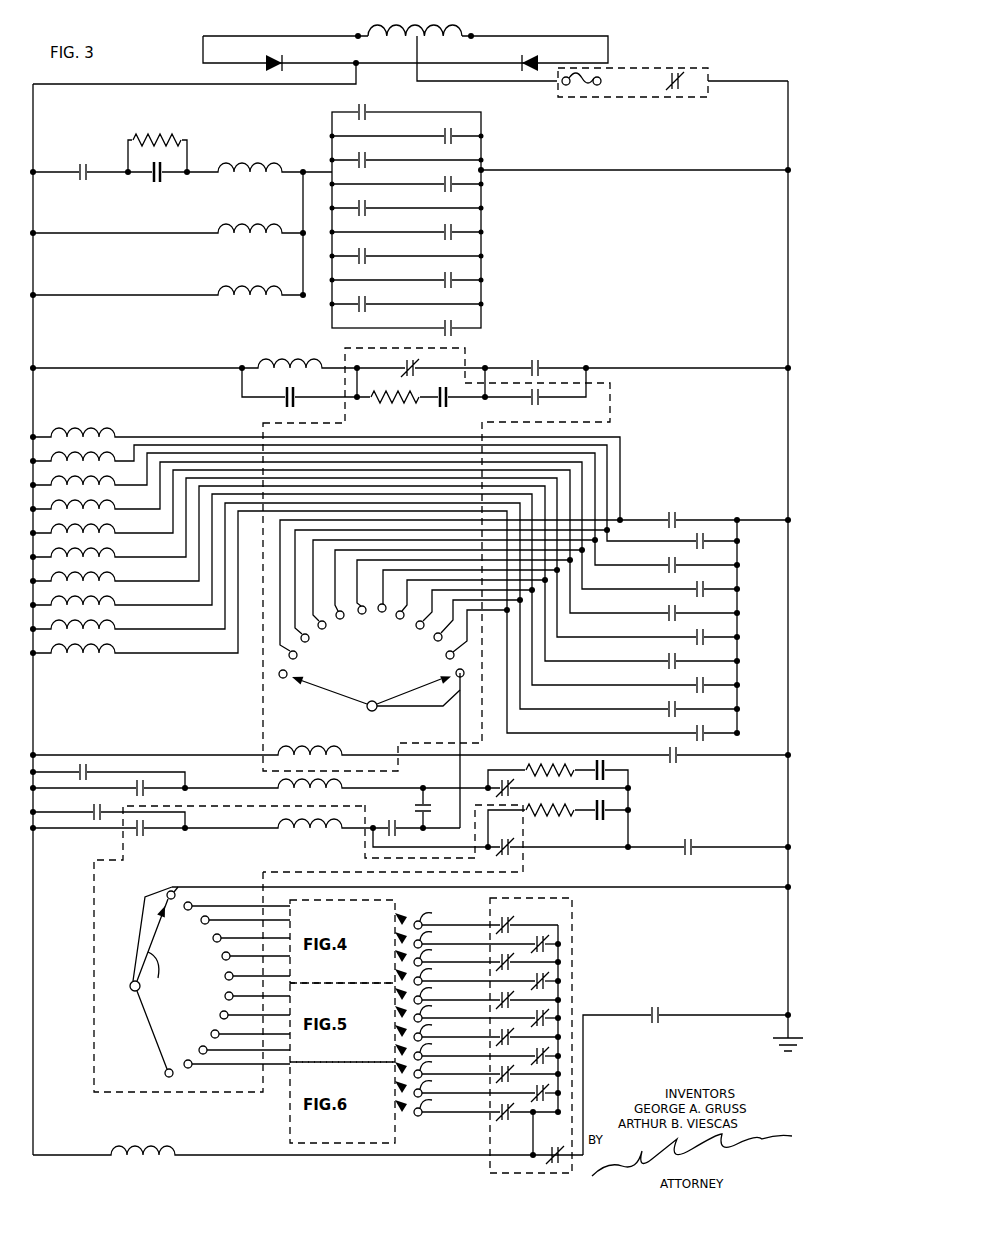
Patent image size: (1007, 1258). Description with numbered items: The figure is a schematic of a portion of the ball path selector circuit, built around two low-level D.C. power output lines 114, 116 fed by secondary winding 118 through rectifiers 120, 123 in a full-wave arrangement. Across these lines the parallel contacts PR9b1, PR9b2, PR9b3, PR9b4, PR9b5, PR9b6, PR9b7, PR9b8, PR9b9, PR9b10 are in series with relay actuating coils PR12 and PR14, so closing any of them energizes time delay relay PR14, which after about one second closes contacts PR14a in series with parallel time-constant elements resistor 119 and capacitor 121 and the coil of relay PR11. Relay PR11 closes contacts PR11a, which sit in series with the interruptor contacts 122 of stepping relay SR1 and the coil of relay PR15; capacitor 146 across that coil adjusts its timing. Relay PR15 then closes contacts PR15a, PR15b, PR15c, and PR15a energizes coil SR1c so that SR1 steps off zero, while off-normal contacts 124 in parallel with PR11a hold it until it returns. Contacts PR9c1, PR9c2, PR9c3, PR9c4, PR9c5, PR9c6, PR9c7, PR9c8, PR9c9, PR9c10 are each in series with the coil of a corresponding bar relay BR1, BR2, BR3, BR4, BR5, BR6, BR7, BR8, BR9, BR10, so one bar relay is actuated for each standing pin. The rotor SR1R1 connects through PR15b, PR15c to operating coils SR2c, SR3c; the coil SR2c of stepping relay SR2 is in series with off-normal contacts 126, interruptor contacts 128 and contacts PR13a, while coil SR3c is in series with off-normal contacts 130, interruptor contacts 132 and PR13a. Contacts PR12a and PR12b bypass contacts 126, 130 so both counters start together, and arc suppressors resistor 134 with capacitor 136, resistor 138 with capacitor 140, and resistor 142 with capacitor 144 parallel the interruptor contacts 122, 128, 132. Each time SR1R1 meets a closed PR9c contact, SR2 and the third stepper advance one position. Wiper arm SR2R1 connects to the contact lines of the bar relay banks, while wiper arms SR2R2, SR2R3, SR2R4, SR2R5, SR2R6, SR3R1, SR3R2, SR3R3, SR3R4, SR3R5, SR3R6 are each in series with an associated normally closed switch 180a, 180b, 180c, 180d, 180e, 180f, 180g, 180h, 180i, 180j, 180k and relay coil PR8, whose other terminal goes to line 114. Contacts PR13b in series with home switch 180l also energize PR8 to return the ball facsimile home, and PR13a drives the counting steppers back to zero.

The power output line 114 is at (33, 105).
The power output line 116 is at (788, 142).
The secondary winding 118 is at (440, 40).
The resistor 119 is at (165, 133).
The rectifier 120 is at (278, 70).
The capacitor 121 is at (155, 185).
The rectifier 123 is at (530, 72).
The interruptor contacts 122 is at (418, 362).
The off-normal contacts 124 is at (537, 406).
The off-normal contacts 126 is at (140, 778).
The interruptor contacts 128 is at (510, 777).
The off-normal contacts 130 is at (145, 836).
The interruptor contacts 132 is at (512, 852).
The resistor 134 is at (375, 405).
The capacitor 136 is at (440, 410).
The resistor 138 is at (540, 762).
The capacitor 140 is at (605, 760).
The resistor 142 is at (530, 817).
The capacitor 144 is at (598, 822).
The capacitor 146 is at (283, 402).
The normally closed switch 180a is at (512, 920).
The normally closed switch 180b is at (547, 939).
The normally closed switch 180c is at (512, 957).
The normally closed switch 180d is at (547, 976).
The normally closed switch 180e is at (512, 995).
The normally closed switch 180f is at (548, 1023).
The normally closed switch 180g is at (512, 1042).
The normally closed switch 180h is at (548, 1061).
The normally closed switch 180i is at (512, 1079).
The normally closed switch 180j is at (510, 1118).
The normally closed switch 180k is at (535, 1100).
The normally closed switch 180l is at (553, 1166).
The relay coil PR8 is at (151, 1139).
The relay PR11 is at (252, 157).
The relay actuating coil PR12 is at (252, 218).
The time delay relay PR14 is at (252, 280).
The relay PR15 is at (292, 353).
The contacts PR14a is at (80, 162).
The contacts PR11a is at (538, 358).
The contacts PR12a is at (82, 762).
The contacts PR12b is at (92, 822).
The contacts PR13a is at (692, 838).
The contacts PR13b is at (658, 1005).
The contacts PR15a is at (670, 765).
The contacts PR15b is at (440, 790).
The contacts PR15c is at (388, 818).
The contacts PR9b1 is at (390, 107).
The contacts PR9b2 is at (412, 131).
The contacts PR9b3 is at (390, 155).
The contacts PR9b4 is at (412, 179).
The contacts PR9b5 is at (390, 203).
The contacts PR9b6 is at (412, 227).
The contacts PR9b7 is at (390, 251).
The contacts PR9b8 is at (412, 275).
The contacts PR9b9 is at (390, 299).
The contacts PR9b10 is at (411, 323).
The contacts PR9c1 is at (668, 512).
The contacts PR9c2 is at (705, 531).
The contacts PR9c3 is at (665, 560).
The contacts PR9c4 is at (690, 586).
The contacts PR9c5 is at (665, 608).
The contacts PR9c6 is at (690, 634).
The contacts PR9c7 is at (663, 656).
The contacts PR9c8 is at (690, 682).
The contacts PR9c9 is at (663, 704).
The contacts PR9c10 is at (690, 730).
The bar relay BR1 is at (90, 430).
The bar relay BR2 is at (105, 467).
The bar relay BR3 is at (105, 491).
The bar relay BR4 is at (105, 515).
The bar relay BR5 is at (105, 539).
The bar relay BR6 is at (105, 563).
The bar relay BR7 is at (105, 587).
The bar relay BR8 is at (105, 611).
The bar relay BR9 is at (105, 635).
The bar relay BR10 is at (105, 659).
The stepping relay SR1 is at (622, 404).
The stepping relay SR2 is at (88, 958).
The rotor SR1R1 is at (444, 674).
The rotary wiper arm SR2R1 is at (210, 980).
The coil SR1c is at (314, 741).
The operating coil SR2c is at (272, 790).
The coil SR3c is at (312, 835).
The wiper arm SR2R2 is at (450, 918).
The wiper arm SR2R3 is at (467, 937).
The wiper arm SR2R4 is at (450, 955).
The wiper arm SR2R5 is at (467, 974).
The wiper arm SR2R6 is at (450, 993).
The wiper arm SR3R1 is at (467, 1011).
The wiper arm SR3R2 is at (450, 1030).
The wiper arm SR3R3 is at (467, 1049).
The wiper arm SR3R4 is at (450, 1067).
The wiper arm SR3R5 is at (467, 1086).
The wiper arm SR3R6 is at (450, 1105).